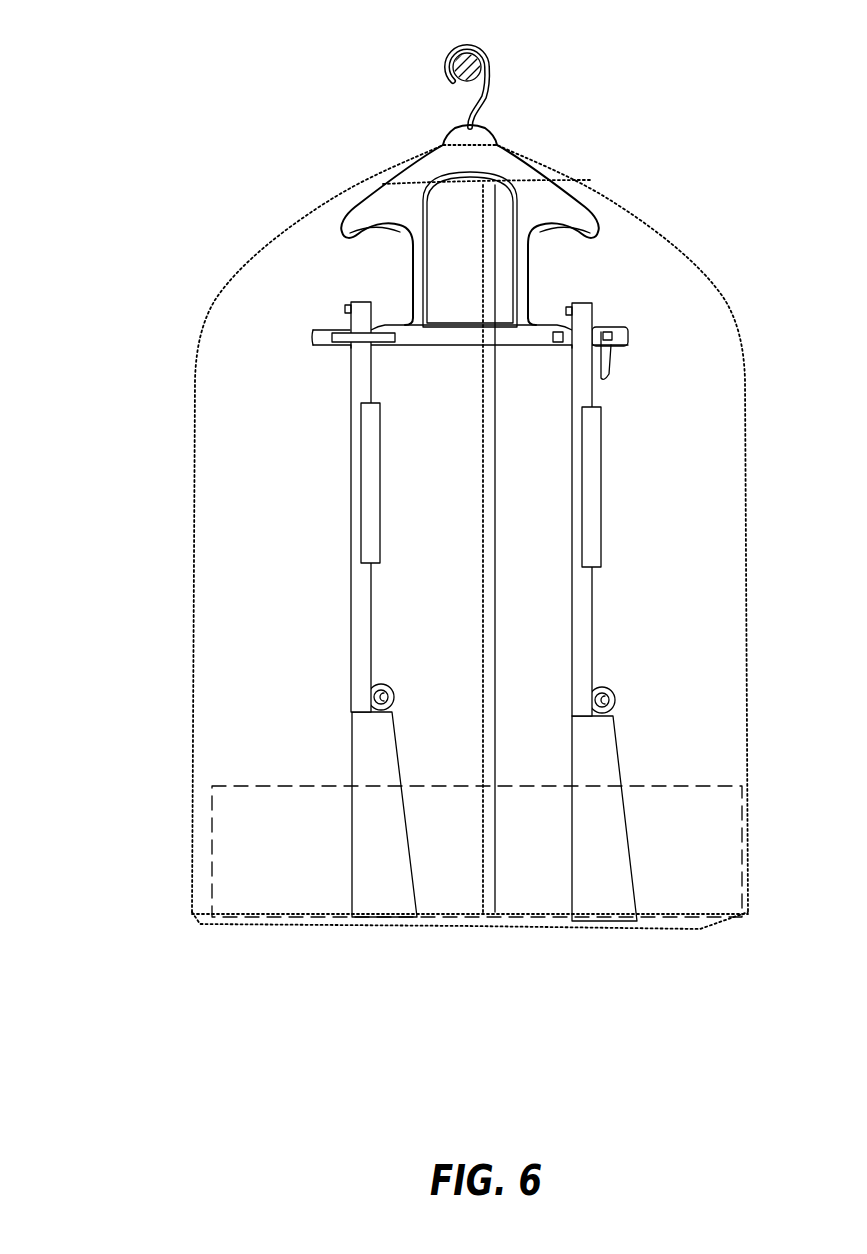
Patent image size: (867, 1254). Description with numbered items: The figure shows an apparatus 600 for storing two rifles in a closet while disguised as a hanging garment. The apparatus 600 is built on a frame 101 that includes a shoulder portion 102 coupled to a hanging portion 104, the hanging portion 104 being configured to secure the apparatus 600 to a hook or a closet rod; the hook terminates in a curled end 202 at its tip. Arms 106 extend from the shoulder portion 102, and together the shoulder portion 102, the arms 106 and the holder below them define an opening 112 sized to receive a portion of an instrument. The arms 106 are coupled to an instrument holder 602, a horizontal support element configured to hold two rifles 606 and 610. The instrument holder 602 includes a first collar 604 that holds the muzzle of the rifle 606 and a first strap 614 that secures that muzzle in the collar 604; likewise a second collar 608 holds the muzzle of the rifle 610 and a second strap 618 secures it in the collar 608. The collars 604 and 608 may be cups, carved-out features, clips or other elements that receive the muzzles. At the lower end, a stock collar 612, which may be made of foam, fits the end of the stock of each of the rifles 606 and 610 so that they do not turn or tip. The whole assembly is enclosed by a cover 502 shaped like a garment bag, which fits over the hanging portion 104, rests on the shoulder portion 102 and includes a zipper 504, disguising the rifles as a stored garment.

The apparatus 600 is at (113, 40).
The cover 502 is at (203, 322).
The shoulder portion 102 is at (380, 193).
The hanging portion 104 is at (487, 102).
The hook end 202 is at (458, 78).
The frame 101 is at (447, 160).
The arms 106 is at (533, 281).
The opening 112 is at (444, 264).
The instrument holder 602 is at (467, 347).
The zipper 504 is at (483, 653).
The stock collar 612 is at (323, 785).
The rifle 606 is at (350, 648).
The rifle 610 is at (592, 653).
The first strap 614 is at (340, 330).
The second strap 618 is at (607, 373).
The first collar 604 is at (345, 352).
The second collar 608 is at (571, 352).